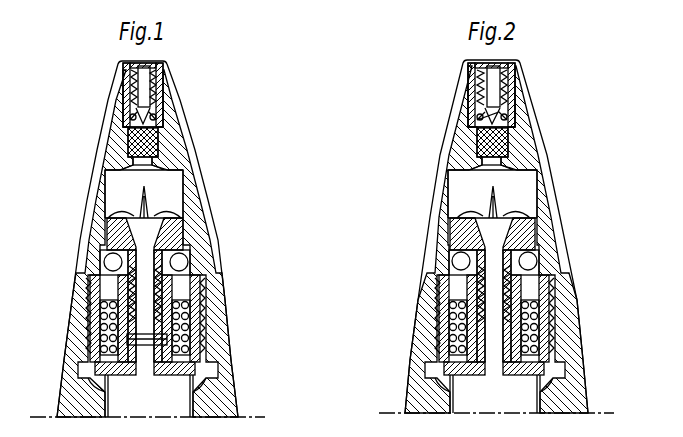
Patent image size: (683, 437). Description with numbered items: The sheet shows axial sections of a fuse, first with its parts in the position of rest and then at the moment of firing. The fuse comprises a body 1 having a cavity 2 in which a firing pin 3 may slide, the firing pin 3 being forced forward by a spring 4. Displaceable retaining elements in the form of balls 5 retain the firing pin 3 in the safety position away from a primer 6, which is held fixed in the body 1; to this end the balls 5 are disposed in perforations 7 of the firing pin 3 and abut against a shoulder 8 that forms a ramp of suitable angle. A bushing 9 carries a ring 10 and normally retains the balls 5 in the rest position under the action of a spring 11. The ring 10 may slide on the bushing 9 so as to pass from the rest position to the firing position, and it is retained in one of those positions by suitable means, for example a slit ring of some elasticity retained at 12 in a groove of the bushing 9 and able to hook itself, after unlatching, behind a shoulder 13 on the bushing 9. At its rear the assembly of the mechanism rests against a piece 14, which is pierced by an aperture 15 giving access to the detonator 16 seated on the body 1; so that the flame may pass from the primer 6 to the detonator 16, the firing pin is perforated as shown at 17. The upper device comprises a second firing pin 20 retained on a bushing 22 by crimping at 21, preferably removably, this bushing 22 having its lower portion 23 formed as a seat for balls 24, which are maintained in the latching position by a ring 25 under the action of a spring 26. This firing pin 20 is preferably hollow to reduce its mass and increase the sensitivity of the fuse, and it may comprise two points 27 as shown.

In FIG. 1, the body 1 is at (93, 171).
In FIG. 2, the body 1 is at (496, 236).
In FIG. 1, the cavity 2 is at (110, 193).
In FIG. 2, the cavity 2 is at (473, 194).
In FIG. 1, the firing pin 3 is at (106, 215).
In FIG. 2, the firing pin 3 is at (513, 211).
In FIG. 1, the spring 4 is at (100, 318).
In FIG. 2, the spring 4 is at (560, 326).
In FIG. 1, the balls 5 is at (200, 260).
In FIG. 2, the balls 5 is at (565, 297).
In FIG. 1, the primer 6 is at (128, 146).
In FIG. 2, the primer 6 is at (507, 143).
In FIG. 1, the perforations 7 is at (96, 262).
In FIG. 2, the perforations 7 is at (435, 297).
In FIG. 1, the shoulder 8 is at (107, 257).
In FIG. 2, the shoulder 8 is at (516, 237).
In FIG. 1, the bushing 9 is at (197, 230).
In FIG. 2, the bushing 9 is at (436, 314).
In FIG. 1, the ring 10 is at (197, 280).
In FIG. 2, the ring 10 is at (558, 313).
In FIG. 1, the spring 11 is at (176, 296).
In FIG. 2, the spring 11 is at (437, 294).
In FIG. 1, the groove retention point 12 is at (180, 306).
In FIG. 1, the shoulder 13 is at (197, 330).
In FIG. 1, the piece 14 is at (198, 364).
In FIG. 2, the piece 14 is at (436, 370).
In FIG. 1, the aperture 15 is at (156, 372).
In FIG. 2, the aperture 15 is at (560, 368).
In FIG. 1, the detonator 16 is at (120, 400).
In FIG. 1, the perforation 17 is at (152, 212).
In FIG. 2, the perforation 17 is at (466, 204).
In FIG. 1, the firing pin 20 is at (124, 92).
In FIG. 1, the crimping 21 is at (118, 66).
In FIG. 1, the bushing 22 is at (168, 108).
In FIG. 1, the lower portion 23 is at (131, 117).
In FIG. 1, the balls 24 is at (160, 122).
In FIG. 1, the ring 25 is at (163, 92).
In FIG. 1, the spring 26 is at (158, 68).
In FIG. 1, the points 27 is at (127, 125).